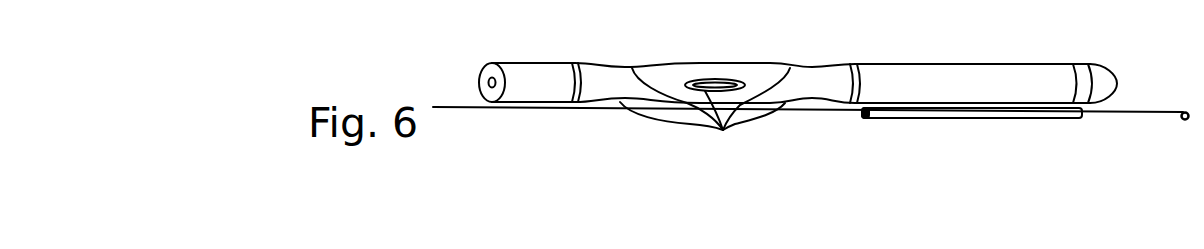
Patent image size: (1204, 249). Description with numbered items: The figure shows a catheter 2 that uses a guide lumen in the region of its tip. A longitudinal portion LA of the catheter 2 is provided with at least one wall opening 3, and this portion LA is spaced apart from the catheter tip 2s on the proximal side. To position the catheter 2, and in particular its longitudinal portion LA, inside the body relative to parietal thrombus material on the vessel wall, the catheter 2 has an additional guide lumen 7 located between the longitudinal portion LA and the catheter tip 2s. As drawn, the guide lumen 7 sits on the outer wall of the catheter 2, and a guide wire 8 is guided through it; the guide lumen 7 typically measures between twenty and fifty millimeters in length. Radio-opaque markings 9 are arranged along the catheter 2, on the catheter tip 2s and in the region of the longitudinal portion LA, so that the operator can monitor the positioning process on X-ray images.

The catheter 2 is at (531, 72).
The catheter tip 2s is at (1097, 61).
The wall opening 3 is at (705, 112).
The guide lumen 7 is at (962, 112).
The guide wire 8 is at (1158, 111).
The radio-opaque markings 9 is at (573, 66).
The longitudinal portion LA is at (577, 54).